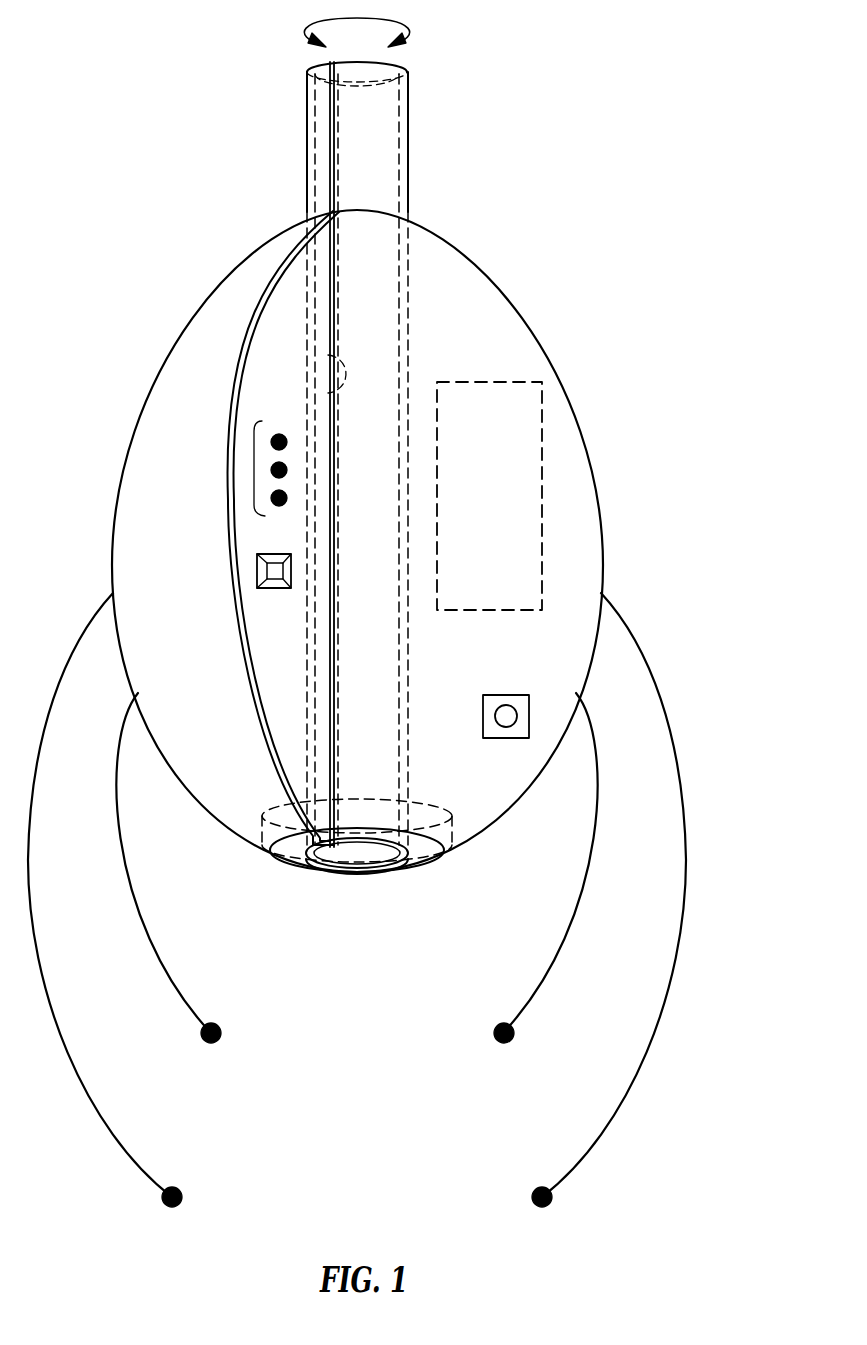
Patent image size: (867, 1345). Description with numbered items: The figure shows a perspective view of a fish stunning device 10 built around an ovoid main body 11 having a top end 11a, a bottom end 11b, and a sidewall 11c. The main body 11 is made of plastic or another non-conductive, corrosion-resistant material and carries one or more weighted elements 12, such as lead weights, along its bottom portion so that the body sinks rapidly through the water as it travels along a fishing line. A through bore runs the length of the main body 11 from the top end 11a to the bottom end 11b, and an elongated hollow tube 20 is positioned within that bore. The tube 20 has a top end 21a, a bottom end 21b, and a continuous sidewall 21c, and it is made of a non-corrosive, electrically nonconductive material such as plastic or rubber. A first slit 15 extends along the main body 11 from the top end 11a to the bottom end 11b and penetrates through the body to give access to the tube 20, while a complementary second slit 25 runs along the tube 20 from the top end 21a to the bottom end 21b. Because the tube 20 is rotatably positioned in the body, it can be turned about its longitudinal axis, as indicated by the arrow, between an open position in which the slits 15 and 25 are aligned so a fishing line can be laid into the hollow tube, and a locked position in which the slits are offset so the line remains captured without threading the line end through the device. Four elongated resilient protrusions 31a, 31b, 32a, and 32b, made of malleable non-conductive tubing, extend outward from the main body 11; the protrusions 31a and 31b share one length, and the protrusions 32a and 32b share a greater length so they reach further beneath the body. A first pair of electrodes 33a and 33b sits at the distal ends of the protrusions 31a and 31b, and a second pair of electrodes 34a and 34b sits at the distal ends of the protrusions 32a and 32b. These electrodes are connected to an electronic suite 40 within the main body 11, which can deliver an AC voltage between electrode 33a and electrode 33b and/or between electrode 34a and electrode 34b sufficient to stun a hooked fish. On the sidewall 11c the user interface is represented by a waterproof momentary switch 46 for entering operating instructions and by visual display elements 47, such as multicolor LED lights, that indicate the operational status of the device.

The fish stunning device 10 is at (373, 603).
The main body 11 is at (520, 288).
The top end 11a is at (423, 240).
The bottom end 11b is at (480, 832).
The sidewall 11c is at (603, 545).
The weighted elements 12 is at (432, 822).
The first slit 15 is at (263, 285).
The elongated hollow tube 20 is at (416, 58).
The top end 21a is at (410, 72).
The bottom end 21b is at (403, 868).
The continuous sidewall 21c is at (407, 310).
The second slit 25 is at (335, 112).
The elongated resilient protrusion 31a is at (125, 877).
The elongated resilient protrusion 31b is at (590, 877).
The elongated resilient protrusion 32a is at (60, 1035).
The elongated resilient protrusion 32b is at (653, 1032).
The electrode 33a is at (220, 1025).
The electrode 33b is at (494, 1031).
The electrode 34a is at (181, 1190).
The electrode 34b is at (533, 1192).
The electronic suite 40 is at (503, 402).
The waterproof momentary switch 46 is at (258, 570).
The visual display elements 47 is at (253, 470).